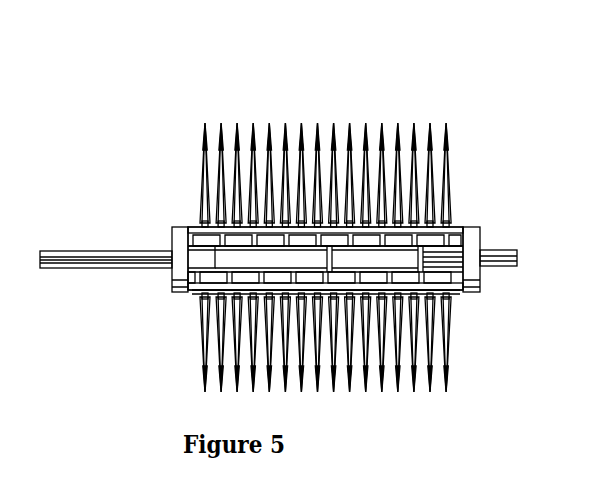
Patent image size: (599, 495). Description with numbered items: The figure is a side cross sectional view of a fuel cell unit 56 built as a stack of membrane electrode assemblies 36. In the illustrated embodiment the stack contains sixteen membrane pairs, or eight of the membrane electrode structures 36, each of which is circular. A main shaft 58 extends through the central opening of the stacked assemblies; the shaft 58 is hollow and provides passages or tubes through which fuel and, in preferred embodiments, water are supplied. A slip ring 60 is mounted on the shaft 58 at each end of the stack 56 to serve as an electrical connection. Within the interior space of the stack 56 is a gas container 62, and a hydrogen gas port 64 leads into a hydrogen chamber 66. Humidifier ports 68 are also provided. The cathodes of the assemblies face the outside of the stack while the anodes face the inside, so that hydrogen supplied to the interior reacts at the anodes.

The fuel cell unit 56 is at (276, 53).
The membrane electrode assemblies 36 is at (446, 128).
The main shaft 58 is at (90, 270).
The slip ring 60 is at (175, 227).
The gas container 62 is at (190, 294).
The hydrogen gas port 64 is at (435, 228).
The hydrogen chamber 66 is at (381, 236).
The humidifier ports 68 is at (325, 237).